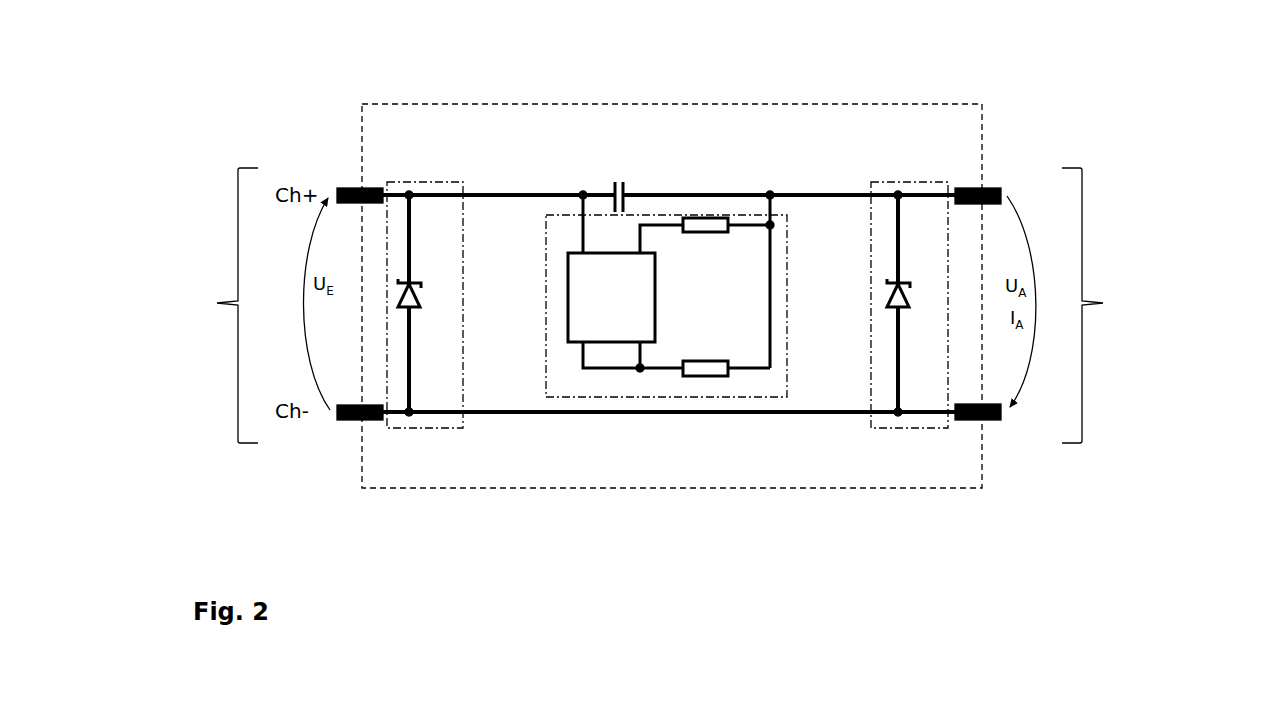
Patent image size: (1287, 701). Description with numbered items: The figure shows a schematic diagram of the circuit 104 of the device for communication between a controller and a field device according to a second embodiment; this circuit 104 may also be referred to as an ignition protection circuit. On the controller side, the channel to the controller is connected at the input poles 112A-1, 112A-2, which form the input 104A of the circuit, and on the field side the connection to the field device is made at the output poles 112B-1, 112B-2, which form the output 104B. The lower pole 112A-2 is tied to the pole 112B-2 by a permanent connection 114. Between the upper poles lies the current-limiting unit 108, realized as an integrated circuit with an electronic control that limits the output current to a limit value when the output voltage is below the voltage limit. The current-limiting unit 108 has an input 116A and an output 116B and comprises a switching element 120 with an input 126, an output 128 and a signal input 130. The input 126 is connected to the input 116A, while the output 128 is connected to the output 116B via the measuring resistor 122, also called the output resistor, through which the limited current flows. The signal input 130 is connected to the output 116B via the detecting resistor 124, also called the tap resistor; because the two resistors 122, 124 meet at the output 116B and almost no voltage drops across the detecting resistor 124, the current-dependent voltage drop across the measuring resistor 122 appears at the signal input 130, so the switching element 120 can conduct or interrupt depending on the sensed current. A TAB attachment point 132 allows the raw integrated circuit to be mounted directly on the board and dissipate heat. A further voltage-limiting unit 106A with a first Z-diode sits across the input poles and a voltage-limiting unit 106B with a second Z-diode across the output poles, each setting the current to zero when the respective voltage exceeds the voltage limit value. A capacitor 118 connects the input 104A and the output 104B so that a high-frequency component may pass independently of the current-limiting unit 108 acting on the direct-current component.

The circuit of the device 104 is at (508, 103).
The input of the circuit 104A is at (213, 303).
The output of the circuit 104B is at (1105, 302).
The other voltage-limiting unit 106A is at (423, 182).
The voltage-limiting unit 106B is at (910, 182).
The current-limiting unit 108 is at (785, 215).
The input pole 112A-1 is at (337, 189).
The input pole 112A-2 is at (337, 420).
The output pole 112B-1 is at (1000, 189).
The output pole 112B-2 is at (998, 420).
The permanent connection 114 is at (533, 414).
The input of the current-limiting unit 116A is at (502, 197).
The output of the current-limiting unit 116B is at (825, 197).
The capacitance 118 is at (617, 193).
The switching element 120 is at (618, 319).
The measuring resistor 122 is at (707, 377).
The detecting resistor 124 is at (707, 219).
The input of the switching element 126 is at (568, 195).
The output of the switching element 128 is at (642, 344).
The signal input of the switching element 130 is at (640, 224).
The attachment point of the Tape-Automated Bonding 132 is at (581, 344).